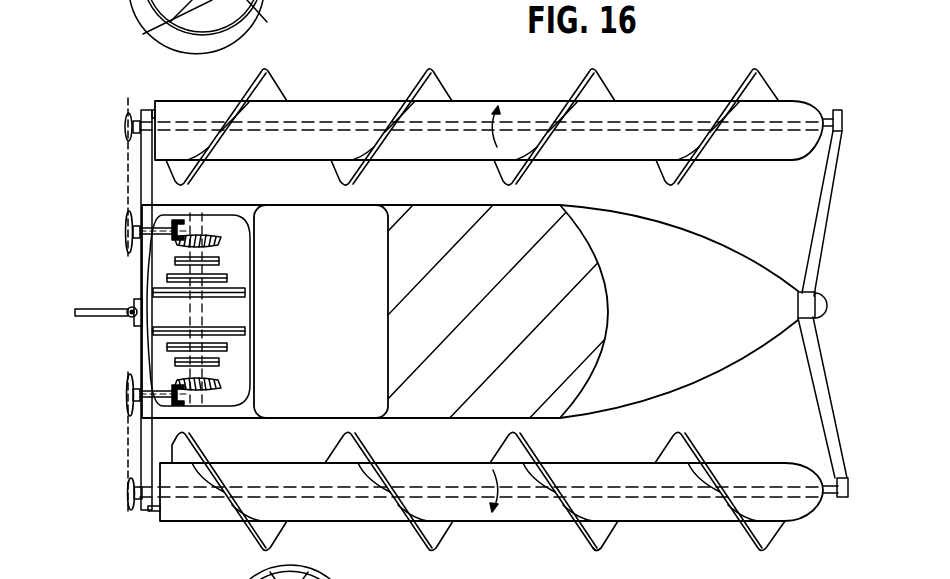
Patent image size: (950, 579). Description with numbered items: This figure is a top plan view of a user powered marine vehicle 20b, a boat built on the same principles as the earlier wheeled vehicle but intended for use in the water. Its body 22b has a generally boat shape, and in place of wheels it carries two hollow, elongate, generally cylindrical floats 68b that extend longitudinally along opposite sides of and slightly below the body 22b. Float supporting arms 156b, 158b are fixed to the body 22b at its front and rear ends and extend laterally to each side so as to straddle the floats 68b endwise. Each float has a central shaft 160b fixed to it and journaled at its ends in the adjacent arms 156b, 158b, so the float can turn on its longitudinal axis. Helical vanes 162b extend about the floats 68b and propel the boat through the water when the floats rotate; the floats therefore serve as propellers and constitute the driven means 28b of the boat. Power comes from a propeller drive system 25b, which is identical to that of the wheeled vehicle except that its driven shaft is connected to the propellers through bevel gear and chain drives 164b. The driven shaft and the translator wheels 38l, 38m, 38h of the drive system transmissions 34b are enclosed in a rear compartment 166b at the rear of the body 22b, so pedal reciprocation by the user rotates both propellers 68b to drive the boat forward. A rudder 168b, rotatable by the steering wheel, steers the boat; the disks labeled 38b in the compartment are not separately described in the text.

The user powered marine vehicle 20b is at (100, 250).
The body 22b is at (701, 235).
The propeller drive system 25b is at (240, 250).
The driven means 28b is at (204, 534).
The drive system transmissions 34b is at (248, 272).
The clutch disk 38b is at (242, 329).
The translator wheel 38h is at (143, 34).
The translator wheel 38l is at (168, 250).
The translator wheel 38m is at (170, 268).
The floats 68b is at (658, 86).
The float supporting arm 156b is at (813, 227).
The float supporting arm 158b is at (148, 173).
The central shaft 160b is at (548, 493).
The helical vanes 162b is at (602, 538).
The bevel gear and chain drives 164b is at (131, 165).
The rear compartment 166b is at (218, 225).
The rudder 168b is at (100, 319).